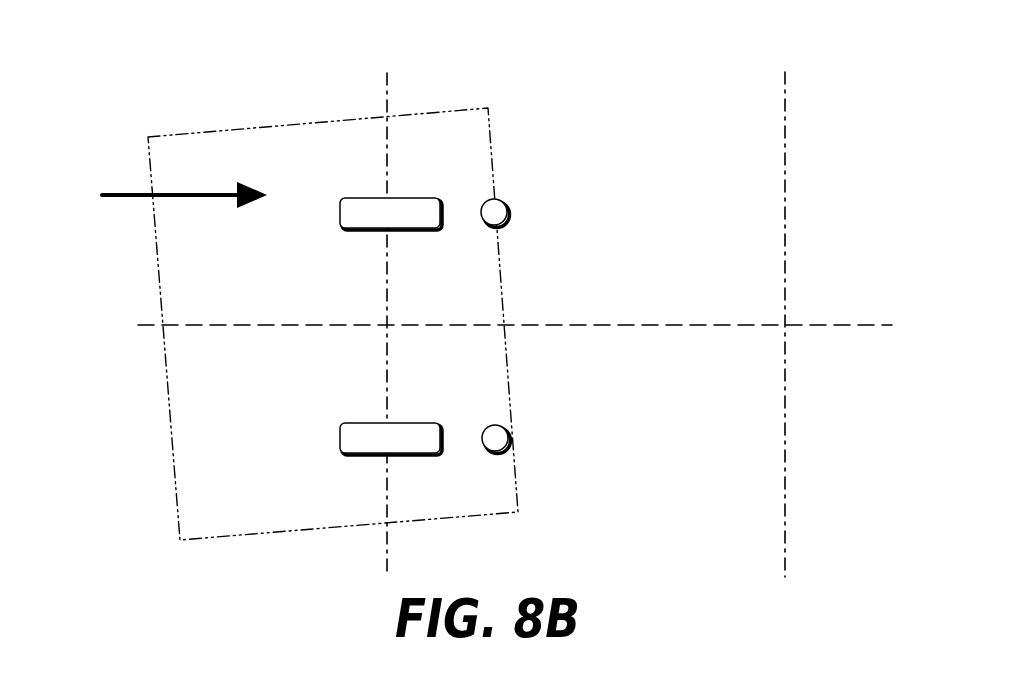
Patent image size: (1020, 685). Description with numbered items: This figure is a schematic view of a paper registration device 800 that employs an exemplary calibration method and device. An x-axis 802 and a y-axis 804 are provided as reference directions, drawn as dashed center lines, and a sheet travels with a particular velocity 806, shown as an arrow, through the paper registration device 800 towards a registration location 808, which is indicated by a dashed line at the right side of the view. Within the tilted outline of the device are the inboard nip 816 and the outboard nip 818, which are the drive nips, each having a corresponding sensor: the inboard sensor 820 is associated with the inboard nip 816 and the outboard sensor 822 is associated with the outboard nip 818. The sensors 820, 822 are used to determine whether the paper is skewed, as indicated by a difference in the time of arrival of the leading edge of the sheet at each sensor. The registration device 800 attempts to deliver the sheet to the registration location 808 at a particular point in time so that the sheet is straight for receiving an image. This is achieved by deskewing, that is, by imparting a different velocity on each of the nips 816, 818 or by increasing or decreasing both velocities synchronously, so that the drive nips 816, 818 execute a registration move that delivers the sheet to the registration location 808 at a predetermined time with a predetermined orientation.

The paper registration device 800 is at (250, 66).
The x-axis 802 is at (790, 323).
The y-axis 804 is at (393, 99).
The velocity 806 is at (122, 193).
The registration location 808 is at (796, 170).
The inboard nip 816 is at (366, 198).
The outboard nip 818 is at (366, 423).
The inboard sensor 820 is at (509, 202).
The outboard sensor 822 is at (510, 428).